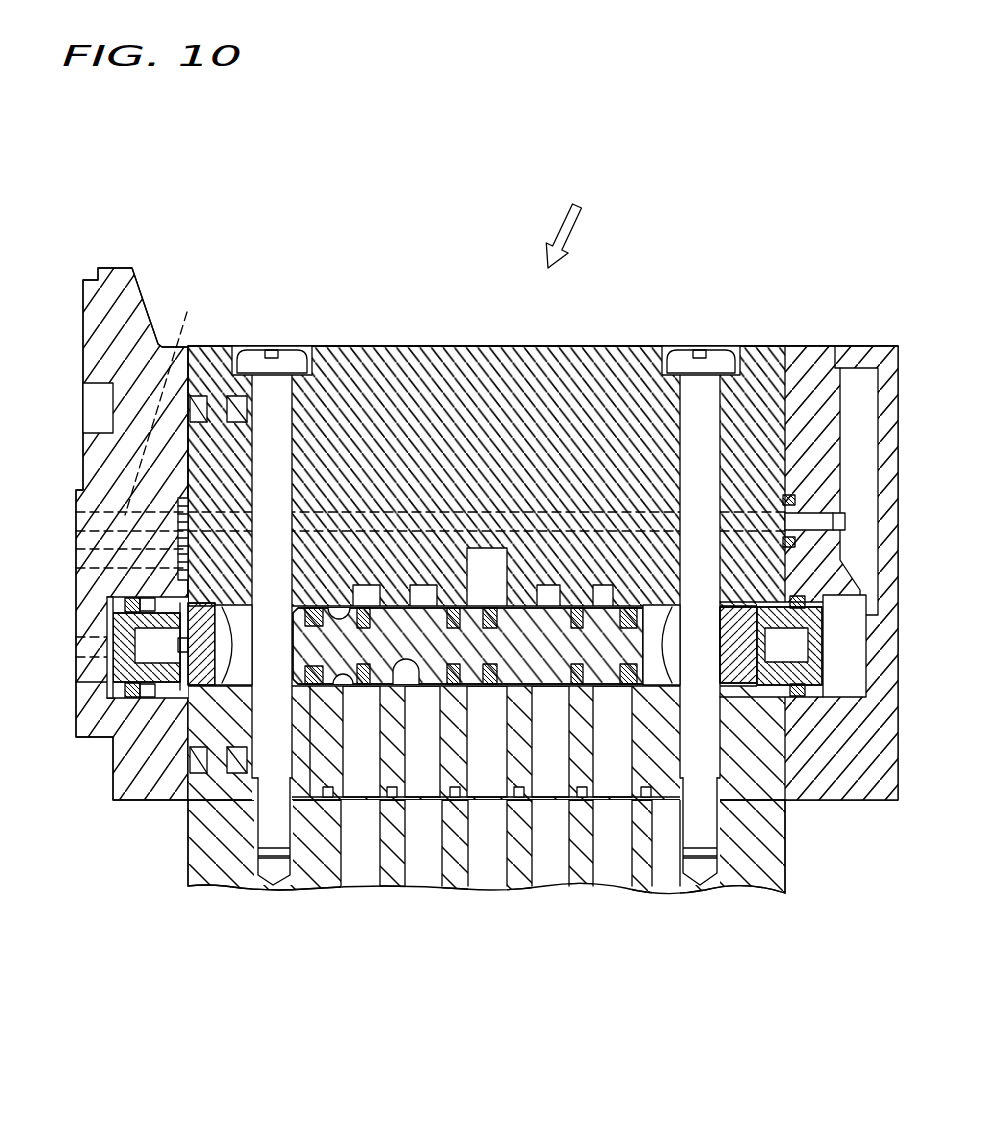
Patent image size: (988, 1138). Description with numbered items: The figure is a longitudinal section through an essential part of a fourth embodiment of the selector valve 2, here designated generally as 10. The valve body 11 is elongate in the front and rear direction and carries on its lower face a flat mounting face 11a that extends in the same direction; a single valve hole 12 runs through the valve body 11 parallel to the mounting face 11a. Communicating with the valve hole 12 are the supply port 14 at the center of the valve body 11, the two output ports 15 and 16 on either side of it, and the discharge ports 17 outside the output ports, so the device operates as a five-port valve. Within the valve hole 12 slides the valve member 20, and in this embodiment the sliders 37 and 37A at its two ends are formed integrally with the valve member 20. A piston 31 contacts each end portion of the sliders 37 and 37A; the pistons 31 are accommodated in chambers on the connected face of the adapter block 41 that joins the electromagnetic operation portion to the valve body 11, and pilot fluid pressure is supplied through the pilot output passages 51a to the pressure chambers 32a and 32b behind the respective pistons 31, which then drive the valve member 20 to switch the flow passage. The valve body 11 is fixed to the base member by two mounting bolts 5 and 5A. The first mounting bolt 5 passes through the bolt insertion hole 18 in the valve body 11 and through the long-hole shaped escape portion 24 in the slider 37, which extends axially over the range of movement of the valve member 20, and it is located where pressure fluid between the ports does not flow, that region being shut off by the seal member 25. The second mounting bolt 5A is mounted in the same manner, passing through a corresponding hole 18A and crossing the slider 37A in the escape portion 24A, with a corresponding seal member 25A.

The selector valve 2 is at (569, 218).
The hydraulic valve 10 is at (580, 323).
The valve body 11 is at (626, 346).
The mounting face 11a is at (760, 880).
The valve hole 12 is at (413, 780).
The supply port 14 is at (483, 780).
The output port 15 is at (433, 780).
The output port 16 is at (550, 780).
The discharge port 17 is at (358, 780).
The bolt insertion hole 18 is at (258, 423).
The bolt head 18A is at (716, 418).
The valve member 20 is at (518, 604).
The escape portion 24 is at (200, 660).
The escape portion 24A is at (662, 650).
The seal member 25 is at (313, 847).
The threaded portion 25A is at (658, 790).
The piston 31 is at (135, 698).
The pressure chamber 32a is at (110, 698).
The pressure chamber 32b is at (850, 650).
The slider 37 is at (140, 598).
The slider 37A is at (790, 690).
The adapter block 41 is at (115, 297).
The mounting bolt 5 is at (273, 443).
The mounting bolt 5A is at (698, 393).
The pilot output passage 51a is at (176, 398).